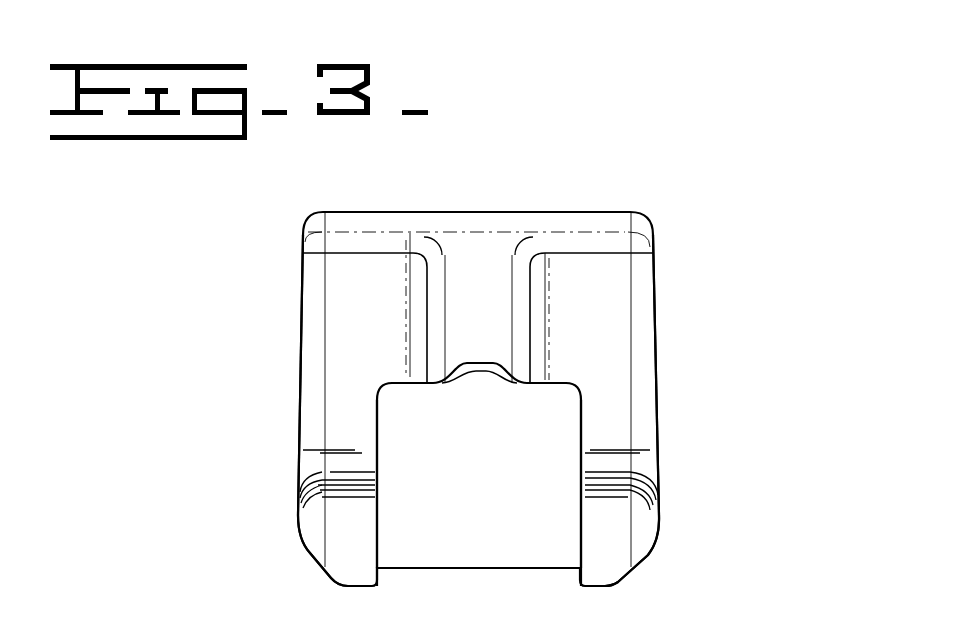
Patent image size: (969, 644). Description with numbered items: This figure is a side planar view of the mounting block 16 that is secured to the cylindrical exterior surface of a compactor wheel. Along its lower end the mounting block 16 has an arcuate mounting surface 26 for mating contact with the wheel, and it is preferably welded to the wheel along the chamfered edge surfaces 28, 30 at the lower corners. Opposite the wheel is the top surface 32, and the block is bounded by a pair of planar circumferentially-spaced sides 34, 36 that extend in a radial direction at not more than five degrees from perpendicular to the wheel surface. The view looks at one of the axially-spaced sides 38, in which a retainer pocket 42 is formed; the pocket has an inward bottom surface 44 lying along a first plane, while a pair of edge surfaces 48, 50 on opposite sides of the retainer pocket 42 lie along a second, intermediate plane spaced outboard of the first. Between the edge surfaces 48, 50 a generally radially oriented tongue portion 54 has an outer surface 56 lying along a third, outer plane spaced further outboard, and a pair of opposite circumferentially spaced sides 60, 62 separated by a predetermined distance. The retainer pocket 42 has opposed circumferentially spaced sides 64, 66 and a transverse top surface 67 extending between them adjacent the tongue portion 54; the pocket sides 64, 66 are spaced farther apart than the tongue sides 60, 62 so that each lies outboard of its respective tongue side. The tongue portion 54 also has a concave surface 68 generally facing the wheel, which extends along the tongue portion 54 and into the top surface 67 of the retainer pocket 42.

The mounting block 16 is at (672, 156).
The arcuate mounting surface 26 is at (505, 568).
The chamfered edge surface 28 is at (330, 573).
The chamfered edge surface 30 is at (643, 560).
The top surface 32 is at (396, 201).
The circumferentially-spaced side 34 is at (302, 312).
The circumferentially-spaced side 36 is at (657, 344).
The axially-spaced side 38 is at (340, 387).
The retainer pocket 42 is at (392, 462).
The bottom surface 44 is at (467, 476).
The edge surface 48 is at (352, 298).
The edge surface 50 is at (579, 361).
The tongue portion 54 is at (466, 290).
The outer surface 56 is at (467, 334).
The circumferentially spaced side 60 is at (427, 350).
The circumferentially spaced side 62 is at (530, 305).
The retainer pocket side 64 is at (377, 548).
The retainer pocket side 66 is at (581, 528).
The transverse top surface 67 is at (552, 383).
The concave surface 68 is at (480, 372).